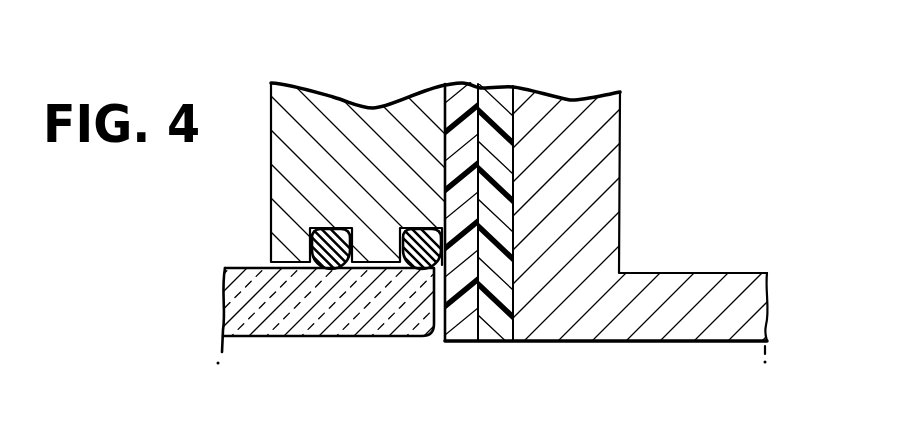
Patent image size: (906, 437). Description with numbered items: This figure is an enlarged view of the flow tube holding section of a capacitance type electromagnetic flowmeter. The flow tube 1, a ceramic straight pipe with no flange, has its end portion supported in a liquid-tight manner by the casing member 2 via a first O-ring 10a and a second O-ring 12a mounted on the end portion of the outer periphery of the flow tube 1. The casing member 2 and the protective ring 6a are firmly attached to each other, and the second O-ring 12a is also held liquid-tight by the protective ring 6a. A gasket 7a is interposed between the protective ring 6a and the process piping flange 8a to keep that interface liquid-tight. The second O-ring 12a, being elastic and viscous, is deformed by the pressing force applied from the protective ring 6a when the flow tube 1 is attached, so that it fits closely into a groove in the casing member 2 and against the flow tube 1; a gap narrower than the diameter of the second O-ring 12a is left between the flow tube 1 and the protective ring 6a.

The flow tube 1 is at (242, 307).
The casing member 2 is at (328, 108).
The protective ring 6a is at (461, 102).
The gasket 7a is at (488, 103).
The process piping flange 8a is at (607, 132).
The first O-ring 10a is at (324, 252).
The second O-ring 12a is at (416, 254).